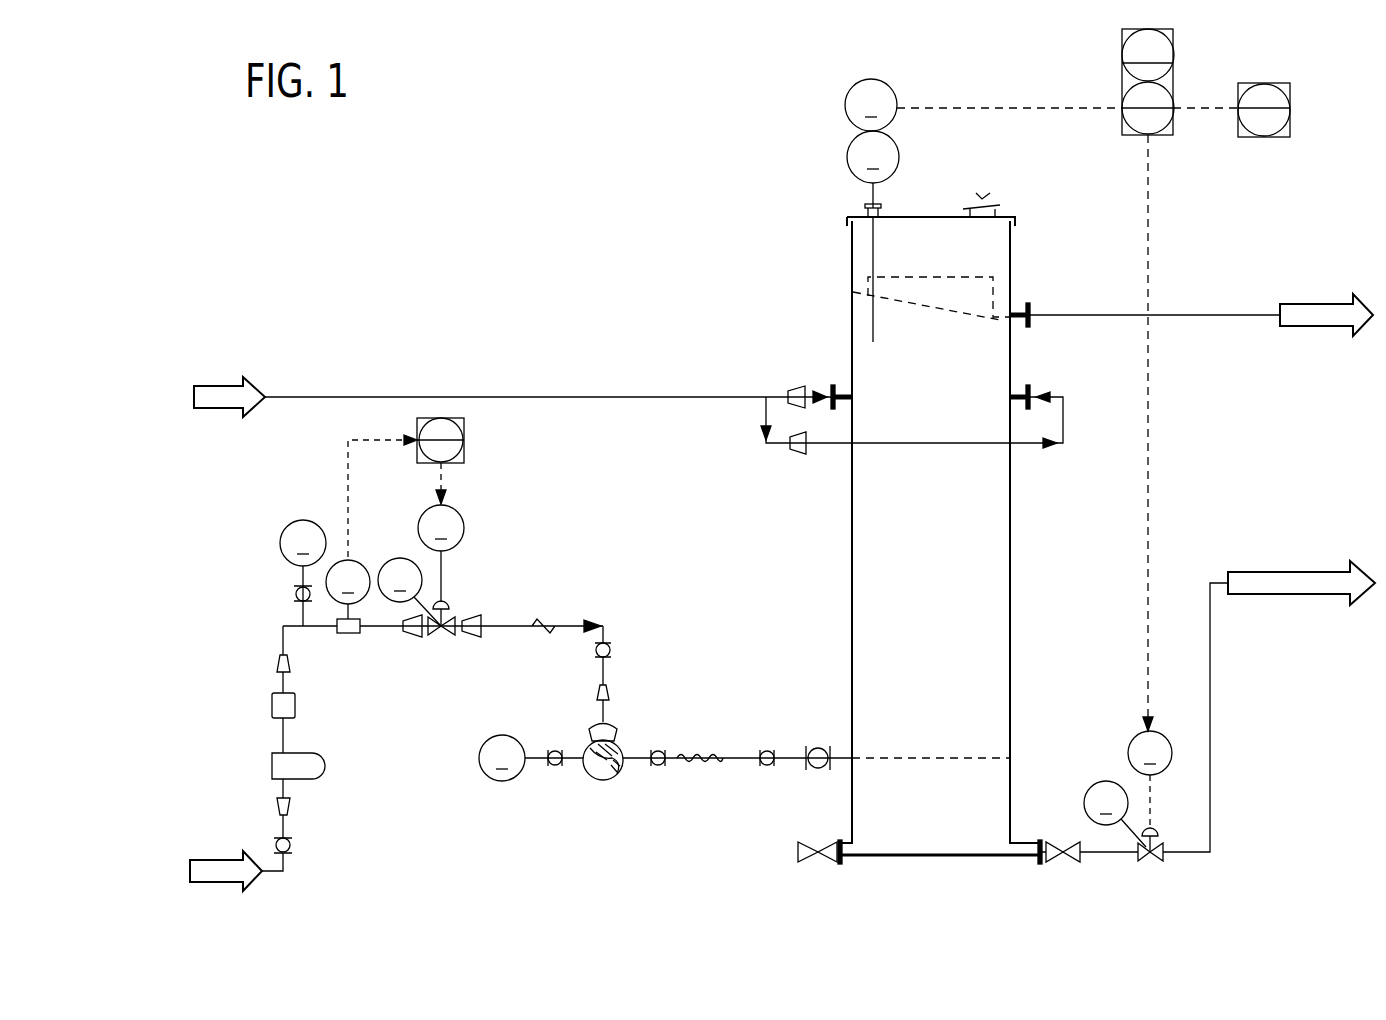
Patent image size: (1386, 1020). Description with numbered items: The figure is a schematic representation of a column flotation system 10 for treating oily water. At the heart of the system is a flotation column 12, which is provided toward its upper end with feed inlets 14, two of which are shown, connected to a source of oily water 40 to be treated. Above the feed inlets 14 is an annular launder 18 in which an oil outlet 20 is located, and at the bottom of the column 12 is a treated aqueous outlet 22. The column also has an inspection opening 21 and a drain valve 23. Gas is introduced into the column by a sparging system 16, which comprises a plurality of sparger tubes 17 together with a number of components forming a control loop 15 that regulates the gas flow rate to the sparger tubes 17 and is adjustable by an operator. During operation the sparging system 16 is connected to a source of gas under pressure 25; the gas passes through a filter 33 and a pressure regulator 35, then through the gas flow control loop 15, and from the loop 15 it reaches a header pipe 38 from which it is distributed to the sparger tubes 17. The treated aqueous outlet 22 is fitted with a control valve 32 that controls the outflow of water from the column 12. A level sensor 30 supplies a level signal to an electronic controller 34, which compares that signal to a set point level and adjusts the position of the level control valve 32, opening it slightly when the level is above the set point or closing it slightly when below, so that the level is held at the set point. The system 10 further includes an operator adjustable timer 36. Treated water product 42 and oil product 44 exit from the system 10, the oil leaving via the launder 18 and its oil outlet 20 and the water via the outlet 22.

The column flotation system 10 is at (608, 226).
The flotation column 12 is at (852, 541).
The feed inlets 14 is at (842, 384).
The control loop 15 is at (517, 549).
The sparging system 16 is at (236, 521).
The sparger tubes 17 is at (886, 733).
The annular launder 18 is at (868, 280).
The oil outlet 20 is at (1018, 304).
The inspection opening 21 is at (988, 203).
The treated aqueous outlet 22 is at (1072, 843).
The drain valve 23 is at (826, 846).
The source of gas under pressure 25 is at (218, 858).
The level sensor 30 is at (873, 242).
The control valve 32 is at (1163, 846).
The filter 33 is at (272, 765).
The electronic controller 34 is at (1130, 137).
The pressure regulator 35 is at (272, 705).
The operator adjustable timer 36 is at (1250, 138).
The header pipe 38 is at (603, 781).
The source of oily water 40 is at (229, 384).
The treated water product 42 is at (1297, 595).
The oil product 44 is at (1318, 330).